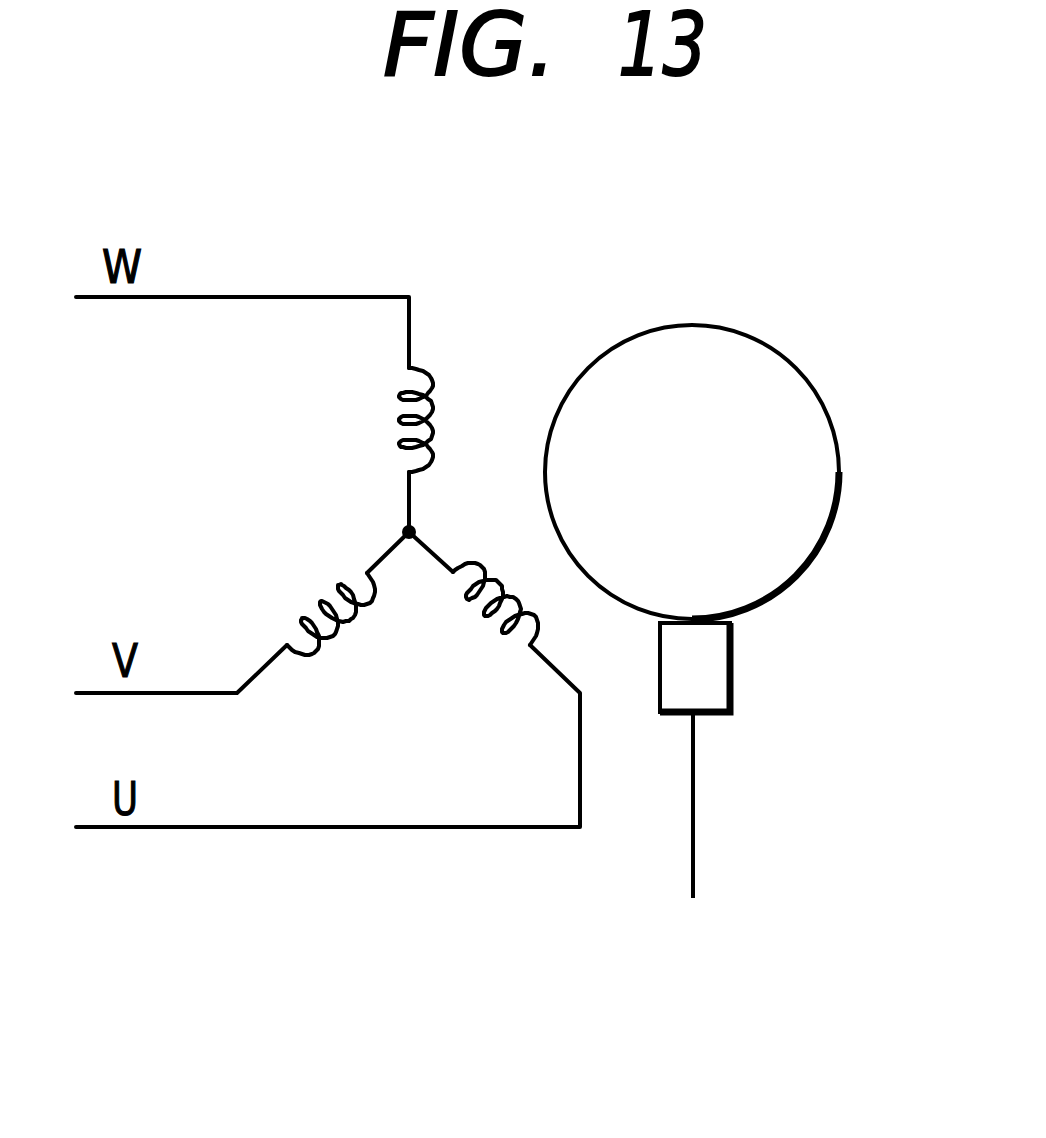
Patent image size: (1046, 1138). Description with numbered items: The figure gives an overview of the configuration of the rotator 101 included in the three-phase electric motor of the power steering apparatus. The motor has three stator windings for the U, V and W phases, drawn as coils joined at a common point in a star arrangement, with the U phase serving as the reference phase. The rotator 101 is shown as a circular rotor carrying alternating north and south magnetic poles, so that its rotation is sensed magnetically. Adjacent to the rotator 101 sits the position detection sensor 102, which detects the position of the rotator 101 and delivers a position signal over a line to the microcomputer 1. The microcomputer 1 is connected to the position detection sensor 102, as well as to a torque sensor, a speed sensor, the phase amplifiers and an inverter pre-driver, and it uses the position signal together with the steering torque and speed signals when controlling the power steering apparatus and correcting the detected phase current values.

The microcomputer 1 is at (696, 838).
The rotator 101 is at (782, 353).
The position detection sensor 102 is at (730, 670).